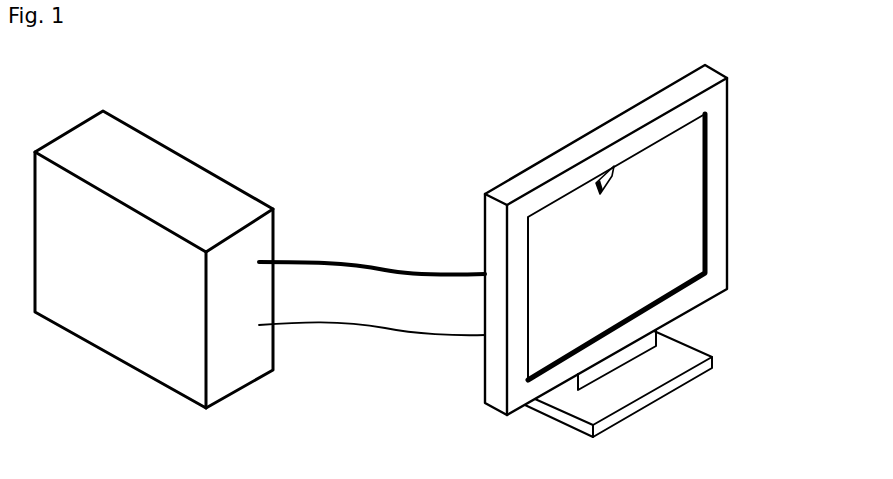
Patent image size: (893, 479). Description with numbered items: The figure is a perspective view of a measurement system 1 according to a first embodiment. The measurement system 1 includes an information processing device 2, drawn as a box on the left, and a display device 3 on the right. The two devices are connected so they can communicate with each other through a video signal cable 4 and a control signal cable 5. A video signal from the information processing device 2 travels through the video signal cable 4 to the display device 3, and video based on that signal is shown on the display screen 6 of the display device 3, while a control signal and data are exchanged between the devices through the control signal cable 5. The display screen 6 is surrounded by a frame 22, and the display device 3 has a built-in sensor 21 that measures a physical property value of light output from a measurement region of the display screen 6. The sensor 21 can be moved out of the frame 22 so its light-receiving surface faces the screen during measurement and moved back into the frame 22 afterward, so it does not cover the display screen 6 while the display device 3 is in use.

The measurement system 1 is at (279, 74).
The information processing device 2 is at (182, 170).
The display device 3 is at (573, 120).
The video signal cable 4 is at (365, 262).
The control signal cable 5 is at (365, 328).
The display screen 6 is at (683, 192).
The sensor 21 is at (608, 184).
The frame 22 is at (718, 117).